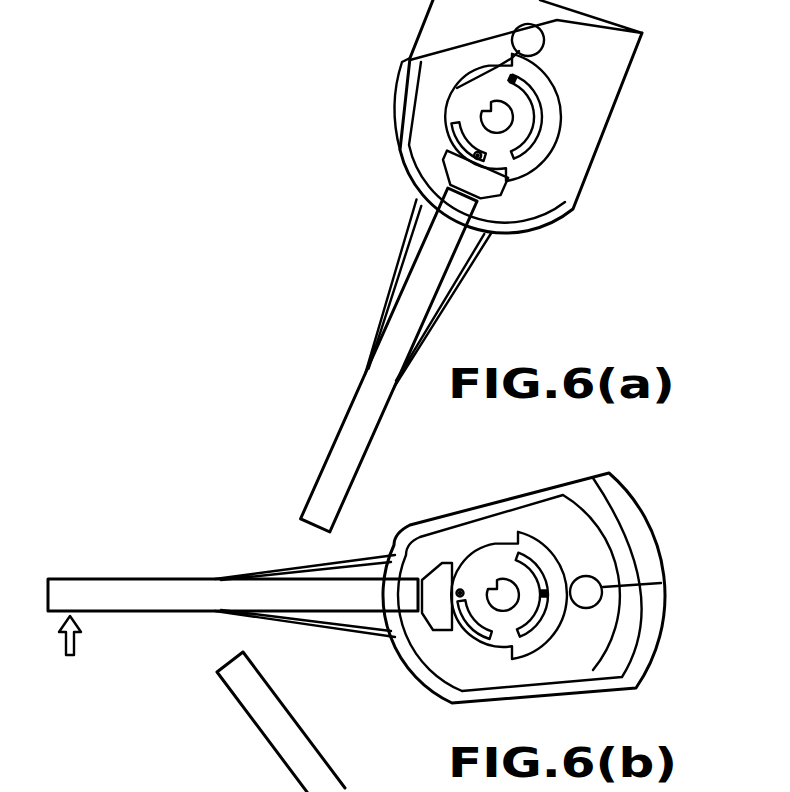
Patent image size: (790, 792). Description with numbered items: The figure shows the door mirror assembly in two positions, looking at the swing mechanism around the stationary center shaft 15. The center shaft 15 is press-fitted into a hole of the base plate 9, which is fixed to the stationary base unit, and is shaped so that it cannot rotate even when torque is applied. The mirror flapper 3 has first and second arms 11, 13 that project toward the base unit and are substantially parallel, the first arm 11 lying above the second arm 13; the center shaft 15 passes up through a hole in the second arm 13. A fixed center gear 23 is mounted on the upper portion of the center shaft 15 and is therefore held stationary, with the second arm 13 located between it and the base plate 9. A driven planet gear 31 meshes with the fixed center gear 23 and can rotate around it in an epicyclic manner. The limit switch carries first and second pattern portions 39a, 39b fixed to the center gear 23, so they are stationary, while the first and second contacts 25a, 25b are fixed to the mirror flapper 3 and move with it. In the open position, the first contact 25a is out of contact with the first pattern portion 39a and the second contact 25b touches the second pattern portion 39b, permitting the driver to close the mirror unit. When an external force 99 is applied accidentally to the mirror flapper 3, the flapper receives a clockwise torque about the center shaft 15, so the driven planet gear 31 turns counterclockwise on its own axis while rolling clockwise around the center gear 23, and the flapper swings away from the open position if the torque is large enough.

In FIG. 6A, the mirror flapper 3 is at (331, 462).
In FIG. 6B, the mirror flapper 3 is at (72, 585).
In FIG. 6A, the base plate 9 is at (622, 143).
In FIG. 6B, the base plate 9 is at (608, 556).
In FIG. 6B, the first arm 11 is at (614, 584).
In FIG. 6B, the second arm 13 is at (634, 578).
In FIG. 6A, the center shaft 15 is at (488, 108).
In FIG. 6B, the center shaft 15 is at (497, 586).
In FIG. 6A, the fixed center gear 23 is at (555, 107).
In FIG. 6B, the fixed center gear 23 is at (550, 552).
In FIG. 6A, the first contact 25a is at (474, 152).
In FIG. 6B, the first contact 25a is at (460, 590).
In FIG. 6A, the second contact 25b is at (512, 75).
In FIG. 6B, the second contact 25b is at (547, 594).
In FIG. 6A, the driven planet gear 31 is at (547, 41).
In FIG. 6B, the driven planet gear 31 is at (600, 603).
In FIG. 6A, the first pattern portion 39a is at (458, 135).
In FIG. 6B, the first pattern portion 39a is at (472, 625).
In FIG. 6A, the second pattern portion 39b is at (520, 158).
In FIG. 6B, the second pattern portion 39b is at (537, 626).
In FIG. 6B, the external force 99 is at (74, 645).